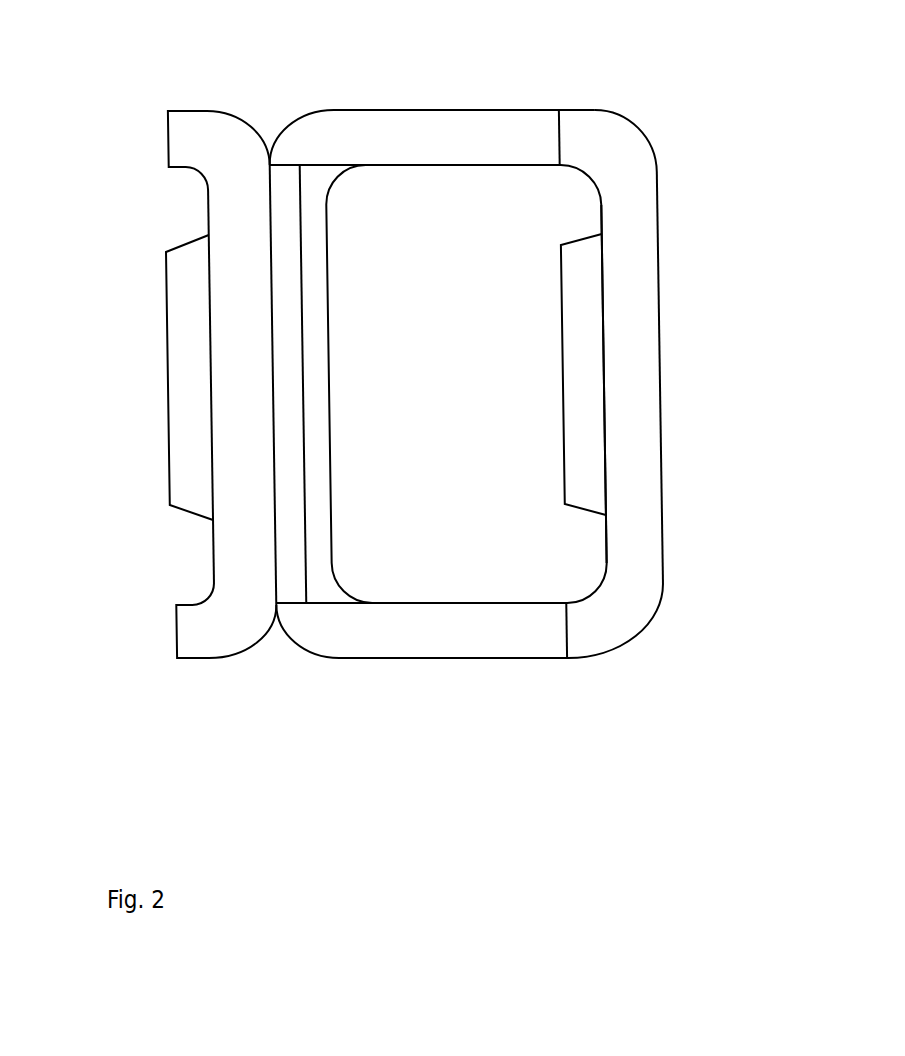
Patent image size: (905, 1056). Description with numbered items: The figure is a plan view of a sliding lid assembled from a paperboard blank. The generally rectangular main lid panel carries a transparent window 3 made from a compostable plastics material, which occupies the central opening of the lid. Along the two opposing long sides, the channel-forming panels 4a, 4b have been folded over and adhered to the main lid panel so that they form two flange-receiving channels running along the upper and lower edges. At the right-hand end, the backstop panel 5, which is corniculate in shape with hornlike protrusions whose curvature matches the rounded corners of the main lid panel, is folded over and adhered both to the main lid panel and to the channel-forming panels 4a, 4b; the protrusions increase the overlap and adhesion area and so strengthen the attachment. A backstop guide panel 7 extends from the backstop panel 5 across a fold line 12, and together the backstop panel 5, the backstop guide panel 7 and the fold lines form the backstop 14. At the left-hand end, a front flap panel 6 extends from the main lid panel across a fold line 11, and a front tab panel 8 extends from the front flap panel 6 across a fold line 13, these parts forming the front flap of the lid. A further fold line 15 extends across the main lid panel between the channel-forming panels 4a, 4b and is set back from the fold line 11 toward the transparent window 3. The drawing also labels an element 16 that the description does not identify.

The transparent window 3 is at (362, 297).
The channel-forming panel 4a is at (345, 122).
The channel-forming panel 4b is at (333, 642).
The backstop panel 5 is at (637, 162).
The front flap panel 6 is at (187, 127).
The backstop guide panel 7 is at (578, 384).
The front tab panel 8 is at (182, 418).
The fourth fold line 11 is at (266, 450).
The fifth fold line 12 is at (607, 472).
The sixth fold line 13 is at (210, 503).
The backstop 14 is at (657, 269).
The seventh fold line 15 is at (207, 211).
The bar 16 is at (298, 234).